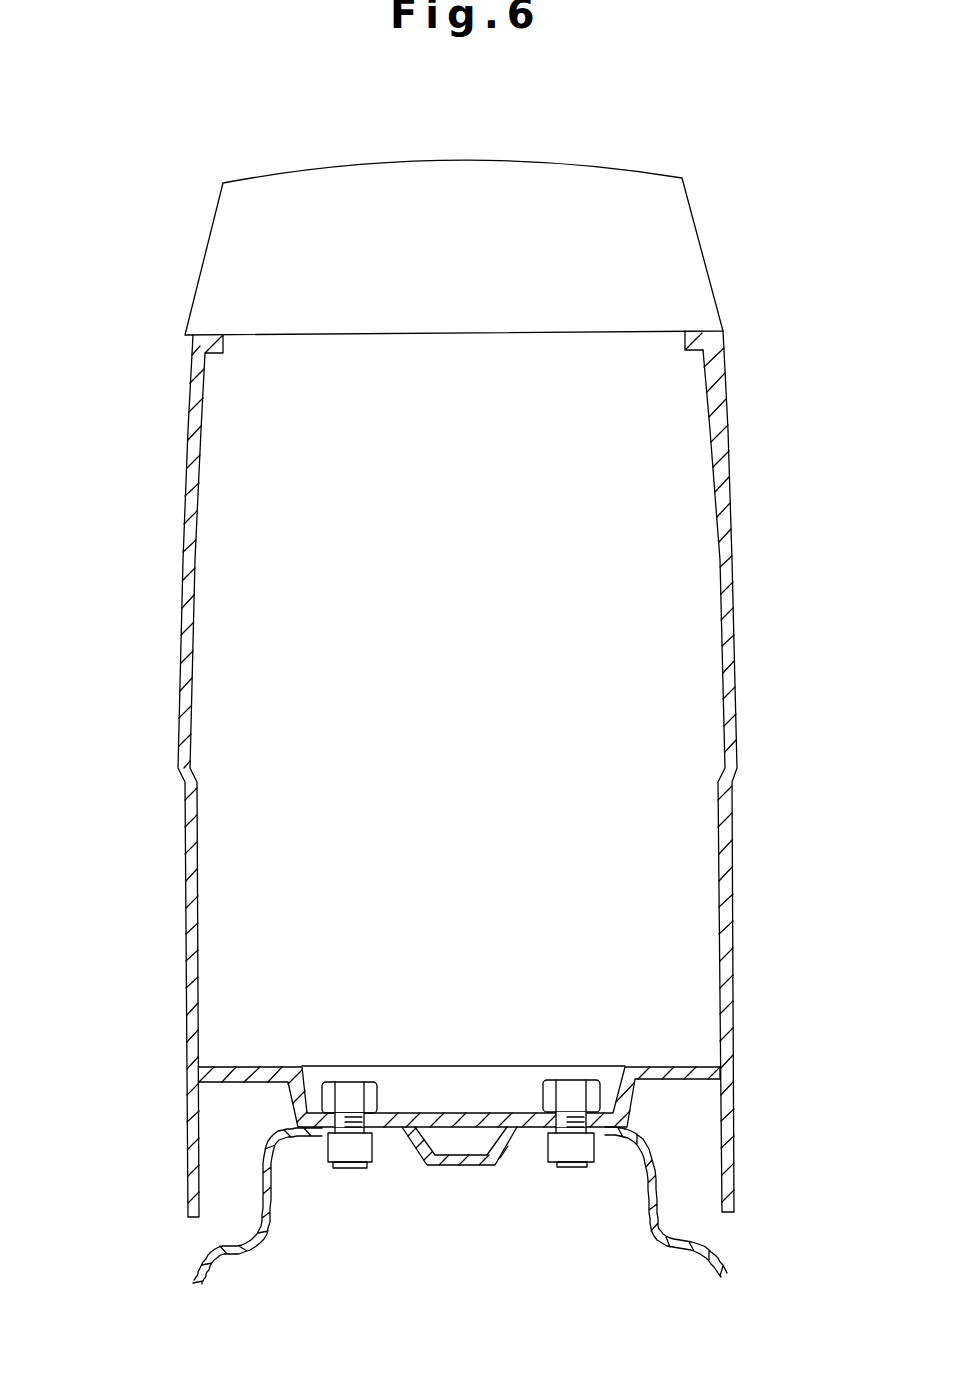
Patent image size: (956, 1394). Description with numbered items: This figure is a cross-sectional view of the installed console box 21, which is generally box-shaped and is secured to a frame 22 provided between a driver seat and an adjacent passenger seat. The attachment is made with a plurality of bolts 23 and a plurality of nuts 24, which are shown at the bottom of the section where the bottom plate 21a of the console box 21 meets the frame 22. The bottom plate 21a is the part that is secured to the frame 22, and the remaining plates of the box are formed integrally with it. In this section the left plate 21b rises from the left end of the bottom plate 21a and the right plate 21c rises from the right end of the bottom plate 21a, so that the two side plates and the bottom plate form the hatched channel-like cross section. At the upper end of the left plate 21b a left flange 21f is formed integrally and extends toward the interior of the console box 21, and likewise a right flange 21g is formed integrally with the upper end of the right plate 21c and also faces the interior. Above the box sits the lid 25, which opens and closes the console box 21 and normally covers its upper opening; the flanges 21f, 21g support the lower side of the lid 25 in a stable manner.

The console box 21 is at (451, 774).
The bottom plate 21a is at (460, 1113).
The left plate 21b is at (179, 666).
The right plate 21c is at (735, 688).
The left flange 21f is at (218, 342).
The right flange 21g is at (682, 340).
The frame 22 is at (266, 1238).
The bolt 23 is at (350, 1094).
The nut 24 is at (347, 1149).
The lid 25 is at (665, 232).